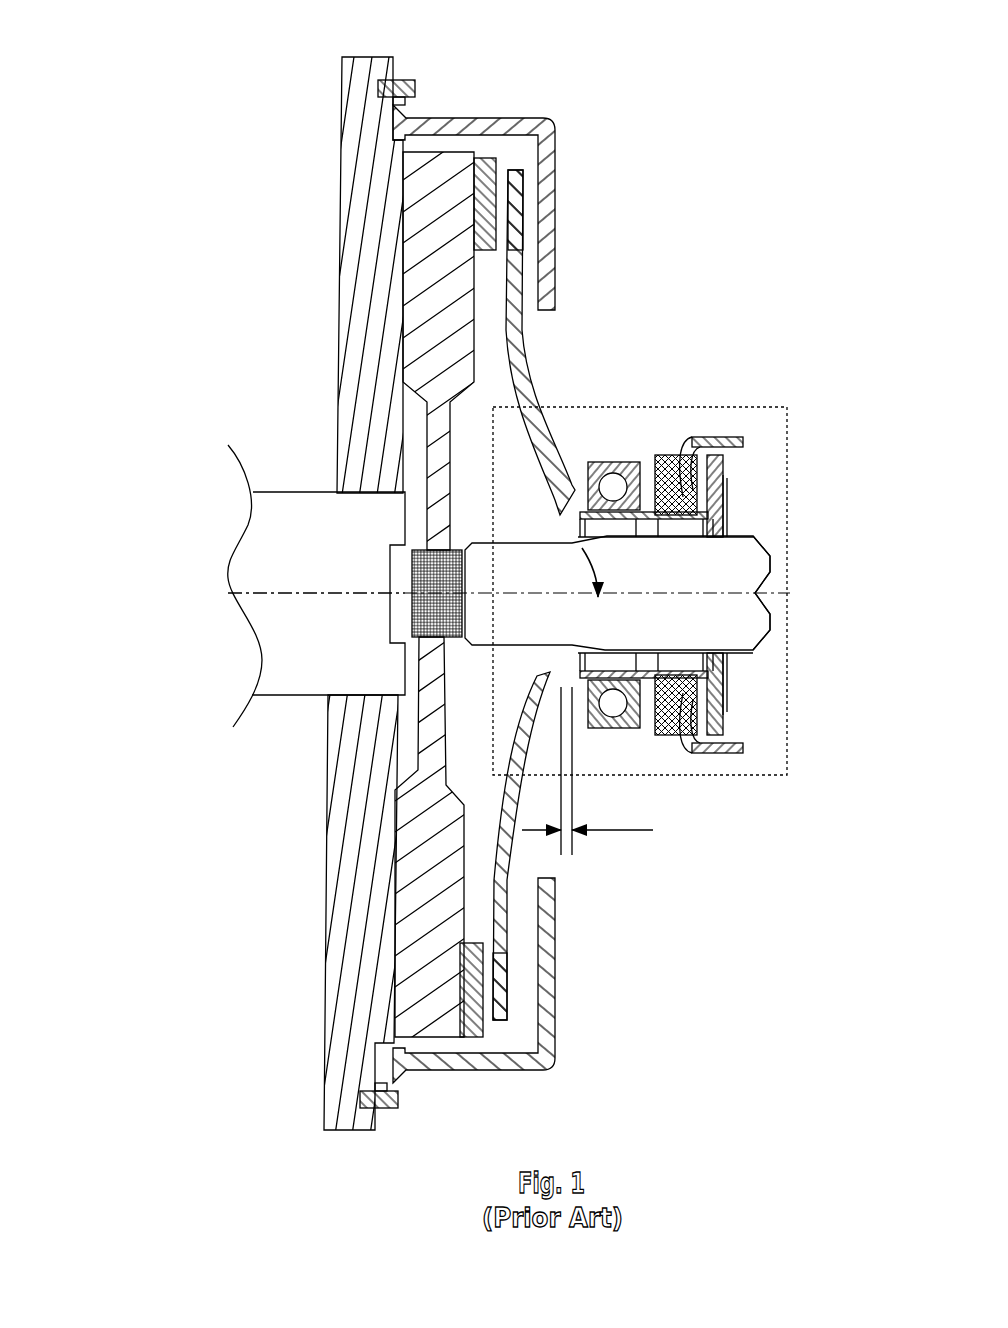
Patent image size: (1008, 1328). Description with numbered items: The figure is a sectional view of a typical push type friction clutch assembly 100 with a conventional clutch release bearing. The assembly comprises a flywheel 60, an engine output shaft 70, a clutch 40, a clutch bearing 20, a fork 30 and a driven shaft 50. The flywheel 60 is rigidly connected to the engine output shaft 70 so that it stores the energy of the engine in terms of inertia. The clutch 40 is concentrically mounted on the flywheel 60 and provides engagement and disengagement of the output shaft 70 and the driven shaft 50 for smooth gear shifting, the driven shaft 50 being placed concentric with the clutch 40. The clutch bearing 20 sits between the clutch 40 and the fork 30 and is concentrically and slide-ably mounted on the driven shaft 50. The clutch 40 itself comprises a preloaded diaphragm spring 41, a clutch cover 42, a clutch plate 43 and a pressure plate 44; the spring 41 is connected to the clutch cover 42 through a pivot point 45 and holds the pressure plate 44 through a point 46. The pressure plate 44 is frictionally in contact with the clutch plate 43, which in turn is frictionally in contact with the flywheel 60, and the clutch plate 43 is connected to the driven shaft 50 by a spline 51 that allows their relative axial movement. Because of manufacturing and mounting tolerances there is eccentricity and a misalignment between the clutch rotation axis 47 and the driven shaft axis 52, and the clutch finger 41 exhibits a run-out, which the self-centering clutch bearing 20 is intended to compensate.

The friction clutch assembly 100 is at (207, 188).
The clutch bearing 20 is at (650, 745).
The fork 30 is at (705, 468).
The clutch 40 is at (513, 105).
The diaphragm spring 41 is at (538, 402).
The clutch cover 42 is at (548, 177).
The clutch plate 43 is at (430, 190).
The pressure plate 44 is at (470, 963).
The pivot point 45 is at (520, 228).
The point 46 is at (500, 1005).
The clutch rotation axis 47 is at (289, 597).
The driven shaft 50 is at (752, 630).
The spline 51 is at (447, 633).
The driven shaft axis 52 is at (752, 595).
The flywheel 60 is at (345, 360).
The engine output shaft 70 is at (288, 548).